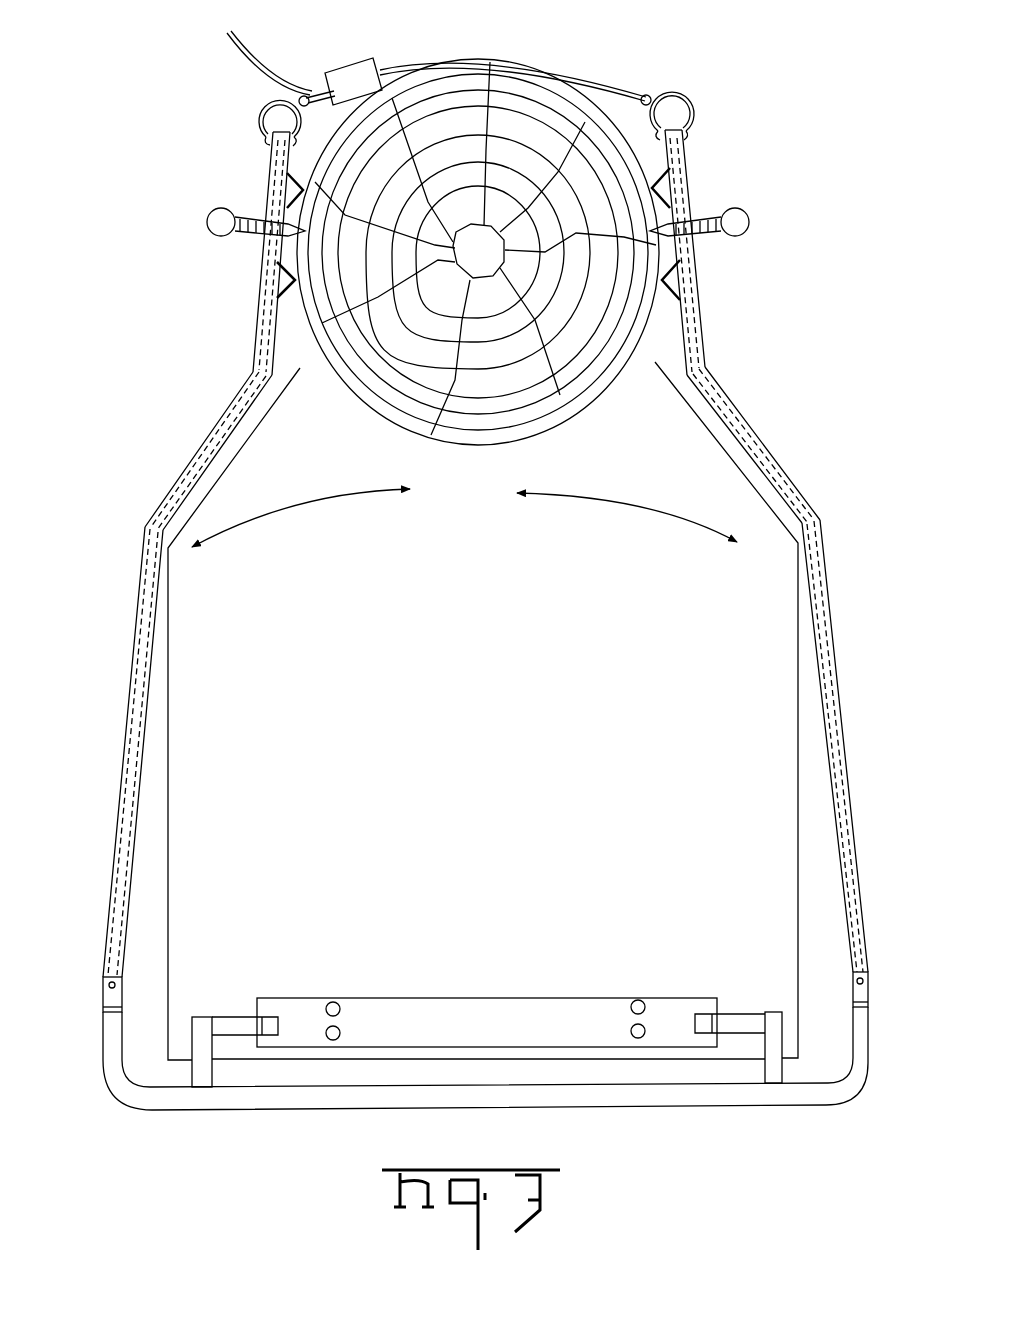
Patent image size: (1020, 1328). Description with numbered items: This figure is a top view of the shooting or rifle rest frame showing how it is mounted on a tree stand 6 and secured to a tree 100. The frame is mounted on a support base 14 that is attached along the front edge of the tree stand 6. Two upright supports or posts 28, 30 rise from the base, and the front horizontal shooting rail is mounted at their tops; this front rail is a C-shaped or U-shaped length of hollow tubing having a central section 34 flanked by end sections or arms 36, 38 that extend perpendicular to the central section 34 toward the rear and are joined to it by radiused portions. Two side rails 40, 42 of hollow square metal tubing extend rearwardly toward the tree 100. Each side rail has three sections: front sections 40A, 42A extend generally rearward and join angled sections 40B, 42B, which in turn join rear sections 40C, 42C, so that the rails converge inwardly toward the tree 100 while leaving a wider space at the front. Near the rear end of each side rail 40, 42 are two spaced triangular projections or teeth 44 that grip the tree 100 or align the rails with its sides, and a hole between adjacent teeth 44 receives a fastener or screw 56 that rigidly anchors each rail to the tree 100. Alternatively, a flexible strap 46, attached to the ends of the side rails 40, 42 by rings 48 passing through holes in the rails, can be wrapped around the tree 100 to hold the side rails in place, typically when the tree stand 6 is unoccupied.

The tree stand 6 is at (483, 711).
The support base 14 is at (432, 1010).
The upright support or post 28 is at (208, 1040).
The upright support or post 30 is at (778, 1050).
The central section 34 is at (628, 1085).
The end section or arm 36 is at (112, 1027).
The end section or arm 38 is at (862, 1020).
The side rail 40 is at (138, 598).
The front section 40A is at (118, 822).
The angled section 40B is at (198, 452).
The rear section 40C is at (262, 328).
The side rail 42 is at (838, 642).
The front section 42A is at (855, 888).
The angled section 42B is at (765, 455).
The rear section 42C is at (690, 273).
The triangular projections or teeth 44 is at (284, 188).
The flexible strap 46 is at (397, 68).
The rings 48 is at (276, 99).
The fastener or screw 56 is at (212, 212).
The tree 100 is at (521, 66).